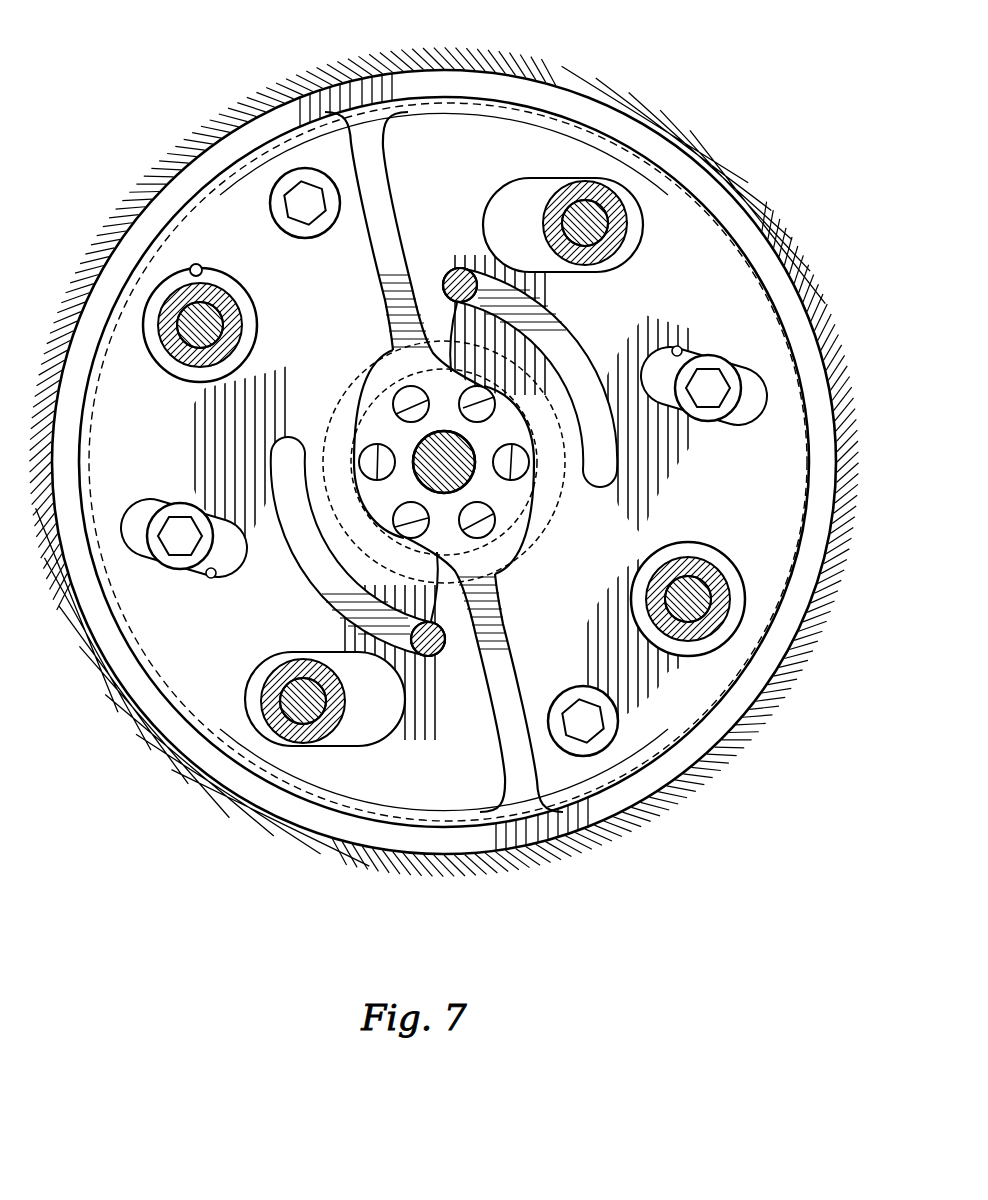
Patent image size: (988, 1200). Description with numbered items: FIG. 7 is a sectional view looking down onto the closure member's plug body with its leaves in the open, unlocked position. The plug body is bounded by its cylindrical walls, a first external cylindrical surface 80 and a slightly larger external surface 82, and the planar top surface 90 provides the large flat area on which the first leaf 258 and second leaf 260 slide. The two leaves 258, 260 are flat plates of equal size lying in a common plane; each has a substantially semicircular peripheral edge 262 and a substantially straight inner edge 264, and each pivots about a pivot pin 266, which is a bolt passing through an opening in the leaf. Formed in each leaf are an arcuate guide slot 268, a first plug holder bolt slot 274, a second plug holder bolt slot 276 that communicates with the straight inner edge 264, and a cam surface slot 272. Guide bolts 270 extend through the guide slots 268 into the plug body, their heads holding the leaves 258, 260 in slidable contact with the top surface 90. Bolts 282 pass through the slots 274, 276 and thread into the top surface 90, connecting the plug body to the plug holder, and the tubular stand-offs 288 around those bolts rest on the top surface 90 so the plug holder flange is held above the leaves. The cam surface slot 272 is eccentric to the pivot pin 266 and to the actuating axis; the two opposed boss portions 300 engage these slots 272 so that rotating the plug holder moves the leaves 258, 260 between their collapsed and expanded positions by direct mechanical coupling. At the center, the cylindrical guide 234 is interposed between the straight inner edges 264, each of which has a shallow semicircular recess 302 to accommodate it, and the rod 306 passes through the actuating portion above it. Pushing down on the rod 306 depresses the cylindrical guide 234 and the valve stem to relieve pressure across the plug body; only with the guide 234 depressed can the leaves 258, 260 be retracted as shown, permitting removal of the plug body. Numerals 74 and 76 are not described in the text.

The housing 74 is at (508, 865).
The ring 76 is at (402, 840).
The first external cylindrical surface 80 is at (478, 826).
The external surface 82 is at (520, 843).
The top surface 90 is at (366, 150).
The cylindrical guide 234 is at (492, 575).
The first leaf 258 is at (237, 207).
The second leaf 260 is at (667, 697).
The semicircular peripheral edge 262 is at (122, 290).
The straight inner edge 264 is at (370, 225).
The pivot pin 266 is at (298, 195).
The arcuate guide slot 268 is at (688, 352).
The guide bolt 270 is at (712, 397).
The cam surface slot 272 is at (568, 332).
The first plug holder bolt slot 274 is at (198, 266).
The second plug holder bolt slot 276 is at (640, 246).
The bolt 282 is at (190, 317).
The tubular stand-off 288 is at (240, 318).
The boss portion 300 is at (455, 278).
The semicircular recess 302 is at (362, 404).
The rod 306 is at (472, 480).